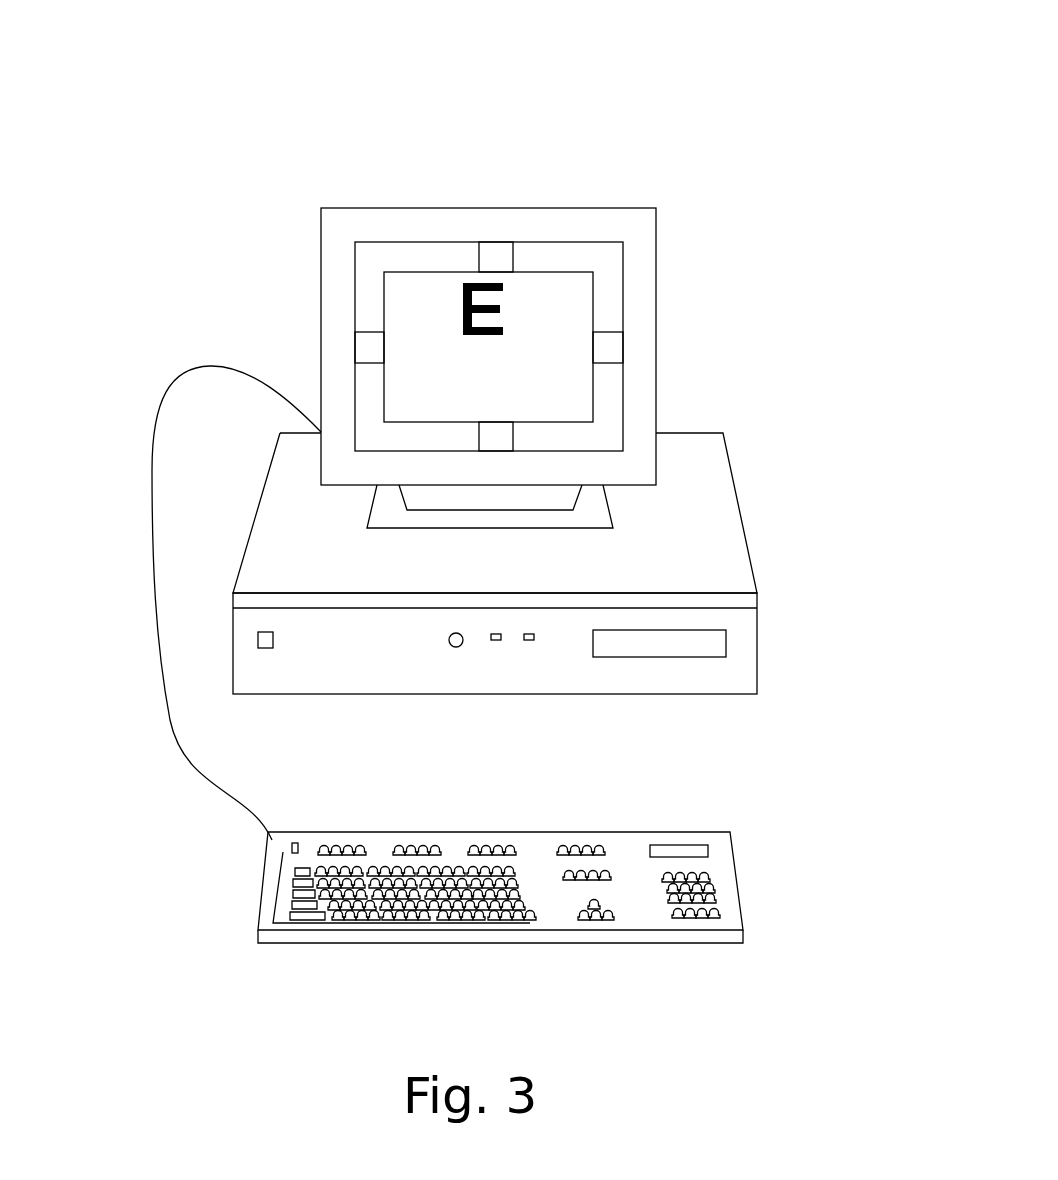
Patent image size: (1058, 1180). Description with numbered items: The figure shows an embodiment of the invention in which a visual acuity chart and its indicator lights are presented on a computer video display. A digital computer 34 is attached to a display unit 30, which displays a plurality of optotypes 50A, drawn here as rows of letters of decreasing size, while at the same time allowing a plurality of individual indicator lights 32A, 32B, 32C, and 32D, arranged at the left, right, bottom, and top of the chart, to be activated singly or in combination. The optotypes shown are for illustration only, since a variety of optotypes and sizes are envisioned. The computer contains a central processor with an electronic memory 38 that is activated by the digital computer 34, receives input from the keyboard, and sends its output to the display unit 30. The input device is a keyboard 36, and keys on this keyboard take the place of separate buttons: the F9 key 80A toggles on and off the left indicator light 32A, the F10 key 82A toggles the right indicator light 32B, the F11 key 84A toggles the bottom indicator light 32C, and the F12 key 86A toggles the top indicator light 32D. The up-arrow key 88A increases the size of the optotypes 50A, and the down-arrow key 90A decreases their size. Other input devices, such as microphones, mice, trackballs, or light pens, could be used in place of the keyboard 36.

The display unit 30 is at (625, 208).
The left indicator light 32A is at (355, 348).
The right indicator light 32B is at (623, 350).
The bottom indicator light 32C is at (497, 242).
The top indicator light 32D is at (495, 451).
The optotypes 50A is at (457, 345).
The digital computer 34 is at (753, 574).
The keyboard 36 is at (569, 886).
The central processor with an electronic memory 38 is at (154, 620).
The F9 key 80A is at (474, 845).
The F10 key 82A is at (486, 845).
The F11 key 84A is at (498, 845).
The F12 key 86A is at (510, 845).
The up-arrow key 88A is at (594, 902).
The down-arrow key 90A is at (595, 920).